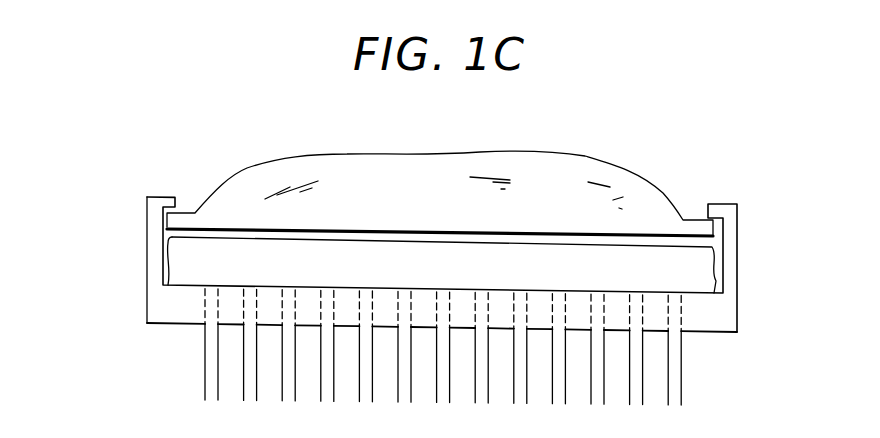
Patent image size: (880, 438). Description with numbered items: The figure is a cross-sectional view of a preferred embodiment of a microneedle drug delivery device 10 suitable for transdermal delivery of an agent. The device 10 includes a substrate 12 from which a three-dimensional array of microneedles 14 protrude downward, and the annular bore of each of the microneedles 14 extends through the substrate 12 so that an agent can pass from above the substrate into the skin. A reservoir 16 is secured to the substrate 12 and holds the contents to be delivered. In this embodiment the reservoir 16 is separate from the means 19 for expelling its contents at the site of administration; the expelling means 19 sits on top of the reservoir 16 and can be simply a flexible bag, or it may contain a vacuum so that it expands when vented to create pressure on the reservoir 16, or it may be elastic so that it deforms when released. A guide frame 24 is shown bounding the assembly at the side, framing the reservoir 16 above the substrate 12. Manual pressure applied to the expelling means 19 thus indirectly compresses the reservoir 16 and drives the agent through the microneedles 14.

The microneedle device 10 is at (210, 125).
The substrate 12 is at (738, 315).
The microneedles 14 is at (682, 372).
The reservoir 16 is at (183, 265).
The means for expelling the contents of the reservoir 19 is at (618, 162).
The plunger guide frame 24 is at (728, 230).